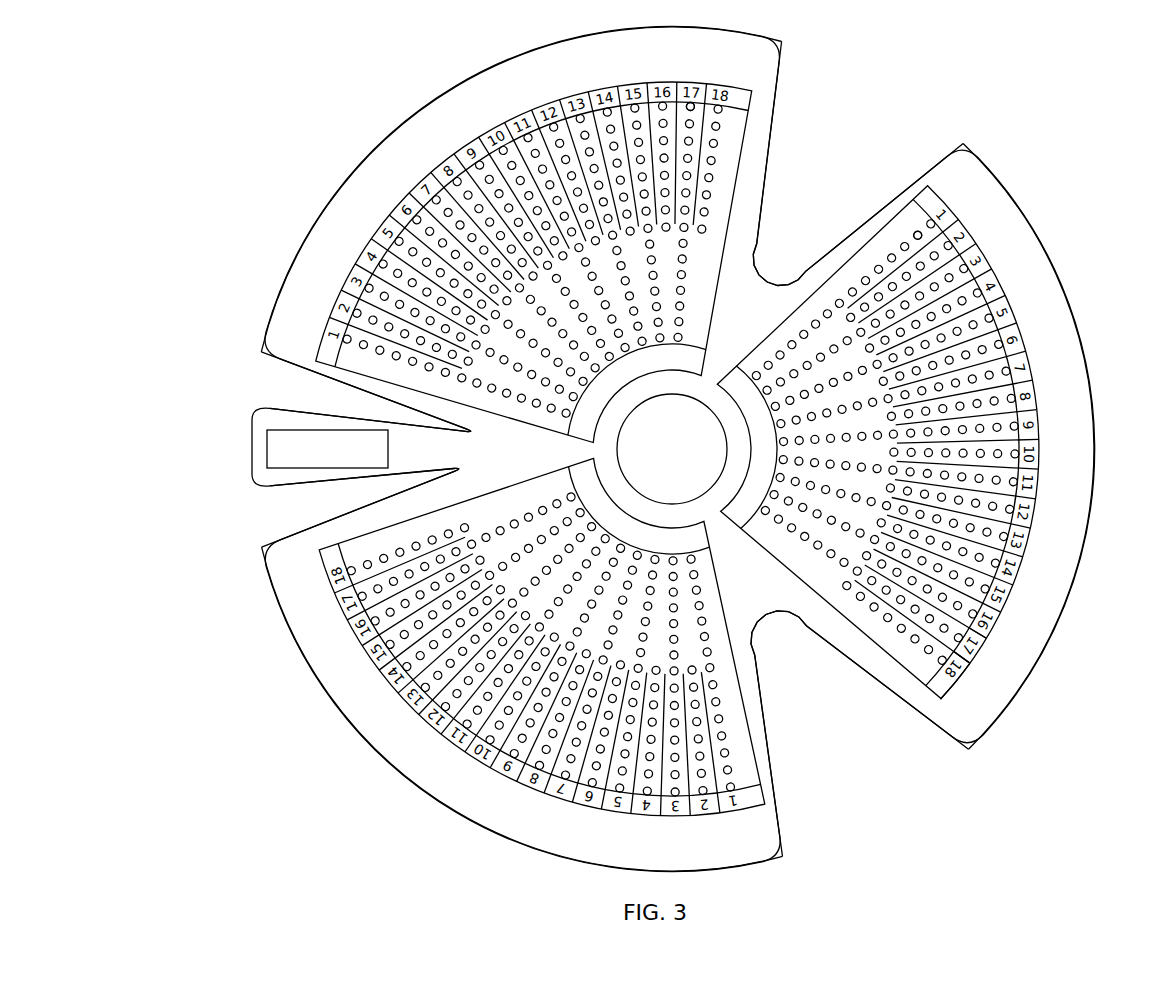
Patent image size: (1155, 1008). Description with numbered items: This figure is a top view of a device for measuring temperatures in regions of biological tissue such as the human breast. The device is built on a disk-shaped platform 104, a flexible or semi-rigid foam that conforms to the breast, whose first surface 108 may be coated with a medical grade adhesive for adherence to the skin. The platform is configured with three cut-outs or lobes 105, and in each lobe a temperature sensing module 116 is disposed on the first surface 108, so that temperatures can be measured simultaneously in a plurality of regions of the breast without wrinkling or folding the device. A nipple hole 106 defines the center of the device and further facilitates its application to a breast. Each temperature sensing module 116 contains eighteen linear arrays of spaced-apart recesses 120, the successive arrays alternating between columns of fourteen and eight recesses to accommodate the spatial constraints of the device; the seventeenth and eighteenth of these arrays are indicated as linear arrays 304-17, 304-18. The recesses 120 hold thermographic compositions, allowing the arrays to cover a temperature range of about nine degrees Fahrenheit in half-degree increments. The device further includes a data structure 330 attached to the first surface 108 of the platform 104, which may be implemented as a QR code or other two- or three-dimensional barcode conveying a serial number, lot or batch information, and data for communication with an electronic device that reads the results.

The platform 104 is at (1069, 304).
The lobes 105 is at (401, 126).
The nipple hole 106 is at (655, 460).
The first surface 108 is at (296, 262).
The temperature sensing module 116 is at (748, 118).
The recesses 120 is at (690, 102).
The data structure 330 is at (243, 440).
The linear array 304-17 is at (992, 662).
The linear array 304-18 is at (973, 685).